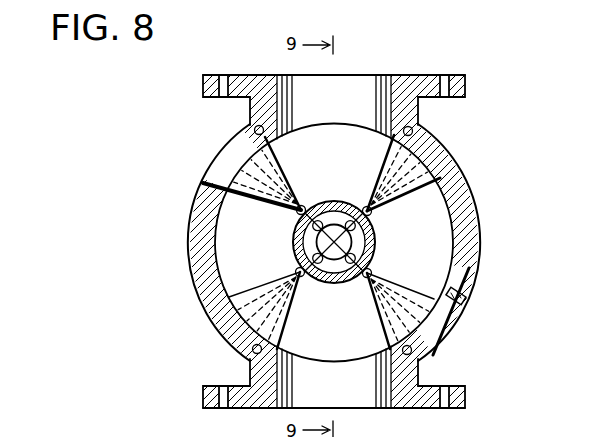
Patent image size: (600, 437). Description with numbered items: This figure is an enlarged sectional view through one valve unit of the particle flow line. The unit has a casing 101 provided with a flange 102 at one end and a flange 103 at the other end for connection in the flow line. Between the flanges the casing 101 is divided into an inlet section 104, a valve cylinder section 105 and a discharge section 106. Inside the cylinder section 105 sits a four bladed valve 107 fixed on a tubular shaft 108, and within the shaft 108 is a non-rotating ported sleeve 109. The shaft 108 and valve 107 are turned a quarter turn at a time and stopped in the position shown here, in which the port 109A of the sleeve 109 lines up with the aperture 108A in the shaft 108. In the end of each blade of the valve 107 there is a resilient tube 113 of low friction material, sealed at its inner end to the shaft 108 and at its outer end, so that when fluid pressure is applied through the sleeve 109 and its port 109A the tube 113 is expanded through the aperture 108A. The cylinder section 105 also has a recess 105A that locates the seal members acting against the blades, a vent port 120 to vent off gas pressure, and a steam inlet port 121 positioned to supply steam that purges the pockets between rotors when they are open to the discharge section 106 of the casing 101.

The casing 101 is at (373, 76).
The flange 102 is at (203, 79).
The flange 103 is at (467, 405).
The inlet section 104 is at (376, 114).
The valve cylinder section 105 is at (479, 241).
The recess 105A is at (254, 130).
The discharge section 106 is at (374, 394).
The four bladed valve 107 is at (291, 166).
The tubular shaft 108 is at (373, 215).
The aperture 108A is at (351, 193).
The ported sleeve 109 is at (309, 279).
The port 109A is at (315, 241).
The resilient tube 113 is at (262, 160).
The vent port 120 is at (203, 184).
The steam inlet port 121 is at (462, 299).